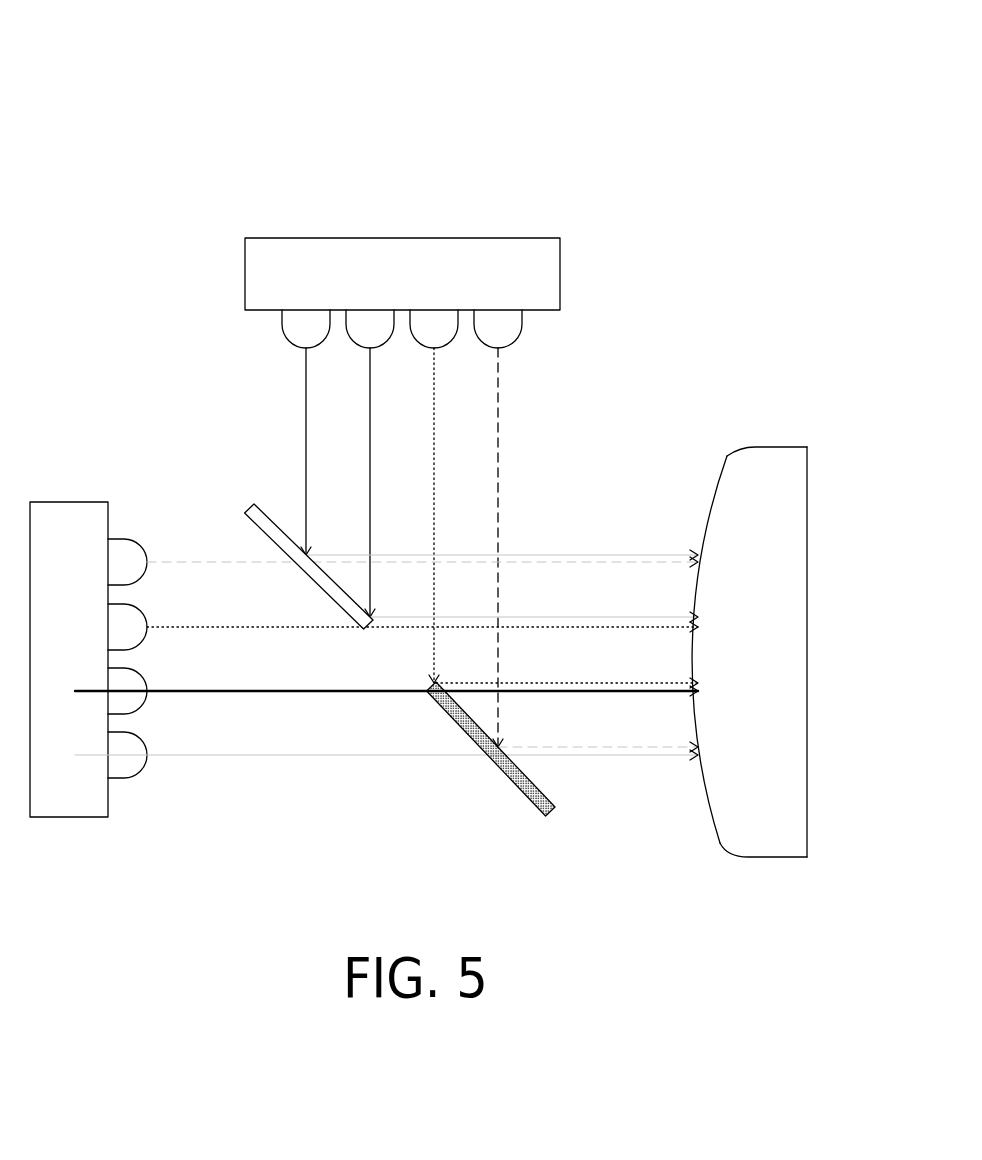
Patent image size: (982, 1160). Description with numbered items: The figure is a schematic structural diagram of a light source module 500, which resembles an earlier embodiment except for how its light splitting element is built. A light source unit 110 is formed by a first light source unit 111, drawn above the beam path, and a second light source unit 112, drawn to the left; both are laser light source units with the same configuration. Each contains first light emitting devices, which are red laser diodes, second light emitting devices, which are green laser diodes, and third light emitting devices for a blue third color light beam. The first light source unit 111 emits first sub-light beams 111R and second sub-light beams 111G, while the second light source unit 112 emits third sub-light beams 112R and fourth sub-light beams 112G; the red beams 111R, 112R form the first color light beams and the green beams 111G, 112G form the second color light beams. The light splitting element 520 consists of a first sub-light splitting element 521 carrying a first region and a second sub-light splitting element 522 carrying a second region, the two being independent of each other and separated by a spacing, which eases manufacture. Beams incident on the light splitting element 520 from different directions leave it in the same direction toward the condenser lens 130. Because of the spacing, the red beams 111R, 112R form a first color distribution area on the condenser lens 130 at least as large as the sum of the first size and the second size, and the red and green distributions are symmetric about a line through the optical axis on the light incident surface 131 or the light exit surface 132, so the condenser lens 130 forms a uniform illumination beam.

The light source module 500 is at (435, 467).
The light source unit 110 is at (409, 444).
The first light source unit 111 is at (441, 345).
The second light source unit 112 is at (155, 633).
The first sub-light beams 111R is at (308, 440).
The second sub-light beams 111G is at (529, 378).
The third sub-light beams 112R is at (224, 692).
The fourth sub-light beams 112G is at (217, 560).
The light splitting element 520 is at (500, 432).
The first sub-light splitting element 521 is at (256, 507).
The second sub-light splitting element 522 is at (533, 804).
The condenser lens 130 is at (755, 627).
The light incident surface 131 is at (715, 488).
The light exit surface 132 is at (808, 500).